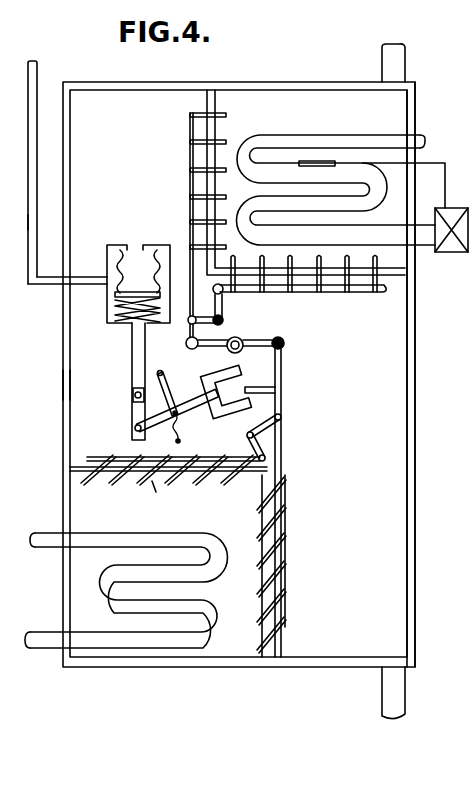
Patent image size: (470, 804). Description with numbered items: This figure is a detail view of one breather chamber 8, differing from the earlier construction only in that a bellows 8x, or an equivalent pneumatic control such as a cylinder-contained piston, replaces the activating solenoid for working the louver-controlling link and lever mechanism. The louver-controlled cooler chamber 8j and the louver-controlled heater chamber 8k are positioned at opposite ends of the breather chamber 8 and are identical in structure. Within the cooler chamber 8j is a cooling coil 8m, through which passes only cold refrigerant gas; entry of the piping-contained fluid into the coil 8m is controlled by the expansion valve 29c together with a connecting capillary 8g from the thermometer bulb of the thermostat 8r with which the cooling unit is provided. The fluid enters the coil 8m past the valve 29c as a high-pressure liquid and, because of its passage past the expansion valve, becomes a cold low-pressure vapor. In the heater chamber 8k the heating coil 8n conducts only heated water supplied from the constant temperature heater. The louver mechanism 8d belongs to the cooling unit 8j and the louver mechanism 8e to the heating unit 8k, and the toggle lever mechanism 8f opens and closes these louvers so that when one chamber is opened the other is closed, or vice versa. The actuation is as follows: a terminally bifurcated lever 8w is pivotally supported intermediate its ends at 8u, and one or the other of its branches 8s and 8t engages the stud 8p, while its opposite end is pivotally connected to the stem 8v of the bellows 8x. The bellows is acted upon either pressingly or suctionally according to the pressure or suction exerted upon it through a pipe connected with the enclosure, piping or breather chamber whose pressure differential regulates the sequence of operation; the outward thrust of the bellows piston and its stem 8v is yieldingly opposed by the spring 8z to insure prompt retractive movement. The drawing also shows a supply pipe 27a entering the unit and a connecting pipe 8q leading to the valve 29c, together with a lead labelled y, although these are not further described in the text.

The breather chamber 8 is at (63, 384).
The louver-controlled heater chamber 8k is at (227, 656).
The supply pipe 27a is at (0, 65).
The pipe branch y is at (27, 222).
The louver-controlled cooler chamber 8j is at (409, 126).
The louver mechanism 8d is at (188, 175).
The cooling coil 8m is at (322, 134).
The thermostat 8r is at (329, 165).
The connecting pipe 8q is at (441, 168).
The expansion valve 29c is at (451, 253).
The branch of bifurcated lever 8s is at (215, 343).
The toggle lever mechanism 8f is at (253, 341).
The bellows 8x is at (106, 262).
The stem 8v is at (130, 430).
The pivot 8u is at (173, 410).
The spring 8z is at (168, 390).
The connecting capillary 8g is at (186, 427).
The heating coil 8n is at (176, 533).
The terminally bifurcated lever 8w is at (228, 396).
The stud 8p is at (270, 386).
The branch of bifurcated lever 8t is at (248, 448).
The louver mechanism 8e is at (279, 580).